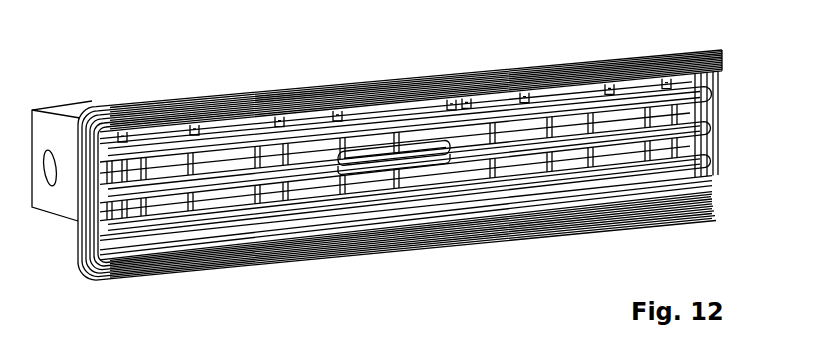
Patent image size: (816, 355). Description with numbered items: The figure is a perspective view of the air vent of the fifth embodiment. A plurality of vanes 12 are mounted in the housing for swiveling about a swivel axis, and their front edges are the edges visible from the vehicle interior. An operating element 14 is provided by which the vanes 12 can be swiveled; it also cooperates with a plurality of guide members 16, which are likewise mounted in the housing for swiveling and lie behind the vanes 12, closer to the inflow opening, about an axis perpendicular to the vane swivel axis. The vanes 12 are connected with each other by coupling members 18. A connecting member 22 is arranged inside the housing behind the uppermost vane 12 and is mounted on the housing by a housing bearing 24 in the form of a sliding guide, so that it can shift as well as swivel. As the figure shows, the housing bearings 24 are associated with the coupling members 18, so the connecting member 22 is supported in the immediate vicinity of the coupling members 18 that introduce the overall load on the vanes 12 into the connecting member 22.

The vanes 12 is at (327, 134).
The operating element 14 is at (412, 150).
The guide members 16 is at (186, 162).
The coupling members 18 is at (294, 188).
The connecting member 22 is at (145, 140).
The housing bearing 24 is at (270, 122).